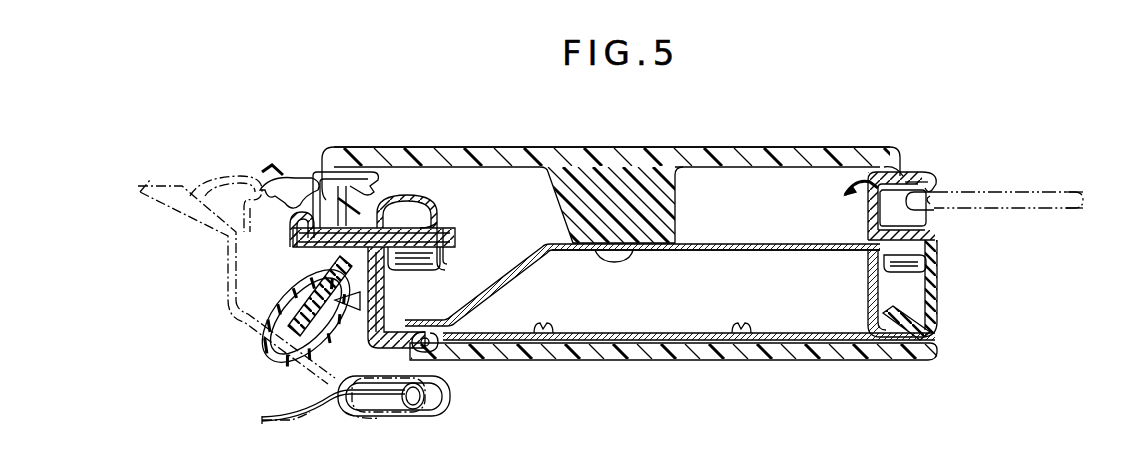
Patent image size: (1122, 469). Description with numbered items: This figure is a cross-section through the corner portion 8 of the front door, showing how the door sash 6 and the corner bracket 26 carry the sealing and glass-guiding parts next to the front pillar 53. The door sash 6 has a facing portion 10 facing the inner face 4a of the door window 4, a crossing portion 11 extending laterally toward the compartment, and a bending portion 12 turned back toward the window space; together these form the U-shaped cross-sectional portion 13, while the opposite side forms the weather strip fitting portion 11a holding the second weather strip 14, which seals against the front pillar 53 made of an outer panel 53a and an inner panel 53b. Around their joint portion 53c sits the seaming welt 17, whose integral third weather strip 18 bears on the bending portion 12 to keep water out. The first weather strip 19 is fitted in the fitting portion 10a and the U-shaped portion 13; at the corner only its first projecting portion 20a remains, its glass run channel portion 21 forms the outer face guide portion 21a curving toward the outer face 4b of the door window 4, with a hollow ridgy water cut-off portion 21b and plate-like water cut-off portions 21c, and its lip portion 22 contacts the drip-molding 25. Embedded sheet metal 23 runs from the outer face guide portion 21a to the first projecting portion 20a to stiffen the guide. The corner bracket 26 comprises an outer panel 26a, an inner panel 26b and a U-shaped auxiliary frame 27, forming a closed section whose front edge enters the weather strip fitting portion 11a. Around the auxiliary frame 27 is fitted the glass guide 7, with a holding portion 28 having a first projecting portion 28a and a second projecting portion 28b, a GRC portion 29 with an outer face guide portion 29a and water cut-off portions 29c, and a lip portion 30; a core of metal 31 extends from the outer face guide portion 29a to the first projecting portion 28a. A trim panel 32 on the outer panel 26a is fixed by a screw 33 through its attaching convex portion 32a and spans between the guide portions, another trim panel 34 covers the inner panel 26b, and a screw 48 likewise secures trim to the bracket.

The door window 4 is at (1048, 192).
The inner face of the door window 4a is at (1075, 210).
The outer face of the door window 4b is at (1072, 192).
The door sash 6 is at (360, 340).
The glass guide 7 is at (948, 232).
The corner portion 8 is at (735, 135).
The facing portion 10 is at (420, 210).
The fitting portion 10a is at (293, 242).
The crossing portion 11 is at (382, 288).
The weather strip fitting portion 11a is at (332, 340).
The bending portion 12 is at (435, 372).
The U-shaped cross-sectional portion 13 is at (445, 238).
The second weather strip 14 is at (262, 345).
The seaming welt 17 is at (405, 418).
The third weather strip 18 is at (432, 348).
The first weather strip 19 is at (462, 240).
The first projecting portion 20a is at (415, 268).
The glass run channel portion 21 is at (322, 158).
The outer face guide portion 21a is at (352, 172).
The hollow and ridgy water cut-off portion 21b is at (390, 195).
The projecting/plate-like water cut-off portions 21c is at (366, 200).
The lip portion 22 is at (285, 178).
The sheet metal 23 is at (436, 215).
The drip-molding 25 is at (205, 182).
The corner bracket 26 is at (780, 240).
The outer panel 26a is at (706, 250).
The inner panel 26b is at (770, 333).
The auxiliary frame 27 is at (868, 290).
The holding portion 28 is at (940, 298).
The first projecting portion 28a is at (925, 282).
The second projecting portion 28b is at (928, 305).
The GRC portion 29 is at (915, 172).
The outer face guide portion 29a is at (930, 178).
The water cut-off portions 29c is at (936, 195).
The lip portion 30 is at (850, 190).
The core of metal 31 is at (888, 172).
The trim panel 32 is at (651, 147).
The attaching convex portion 32a is at (666, 197).
The screw 33 is at (622, 256).
The trim panel 34 is at (666, 362).
The screw 48 is at (542, 330).
The front pillar 53 is at (152, 190).
The outer panel 53a is at (240, 320).
The inner panel 53b is at (280, 412).
The joint portion 53c is at (372, 416).